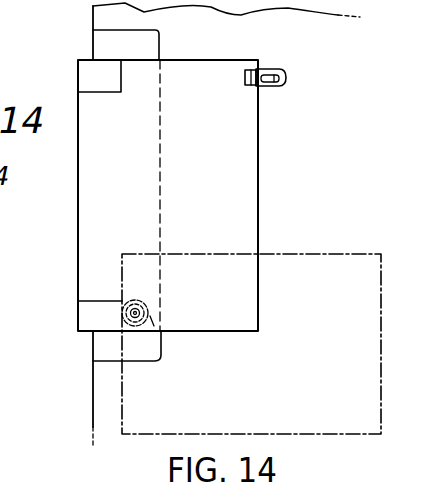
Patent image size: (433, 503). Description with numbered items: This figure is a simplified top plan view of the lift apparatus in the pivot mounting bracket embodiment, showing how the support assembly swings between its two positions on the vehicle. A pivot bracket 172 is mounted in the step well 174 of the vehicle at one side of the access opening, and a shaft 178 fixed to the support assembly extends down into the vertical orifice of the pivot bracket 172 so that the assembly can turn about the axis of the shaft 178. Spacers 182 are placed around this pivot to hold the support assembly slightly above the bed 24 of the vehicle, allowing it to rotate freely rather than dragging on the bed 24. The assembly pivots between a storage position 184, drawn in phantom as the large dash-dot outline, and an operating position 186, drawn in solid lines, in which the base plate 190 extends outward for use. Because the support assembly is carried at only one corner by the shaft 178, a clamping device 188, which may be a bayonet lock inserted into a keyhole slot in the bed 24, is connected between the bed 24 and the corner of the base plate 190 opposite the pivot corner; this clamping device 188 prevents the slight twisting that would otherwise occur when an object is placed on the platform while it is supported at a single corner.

The bed 24 is at (332, 198).
The pivot bracket 172 is at (153, 319).
The step well 174 is at (133, 351).
The shaft 178 is at (125, 318).
The spacers 182 is at (135, 301).
The storage position 184 is at (306, 449).
The operating position 186 is at (280, 120).
The clamping device 188 is at (298, 50).
The base plate 190 is at (205, 195).